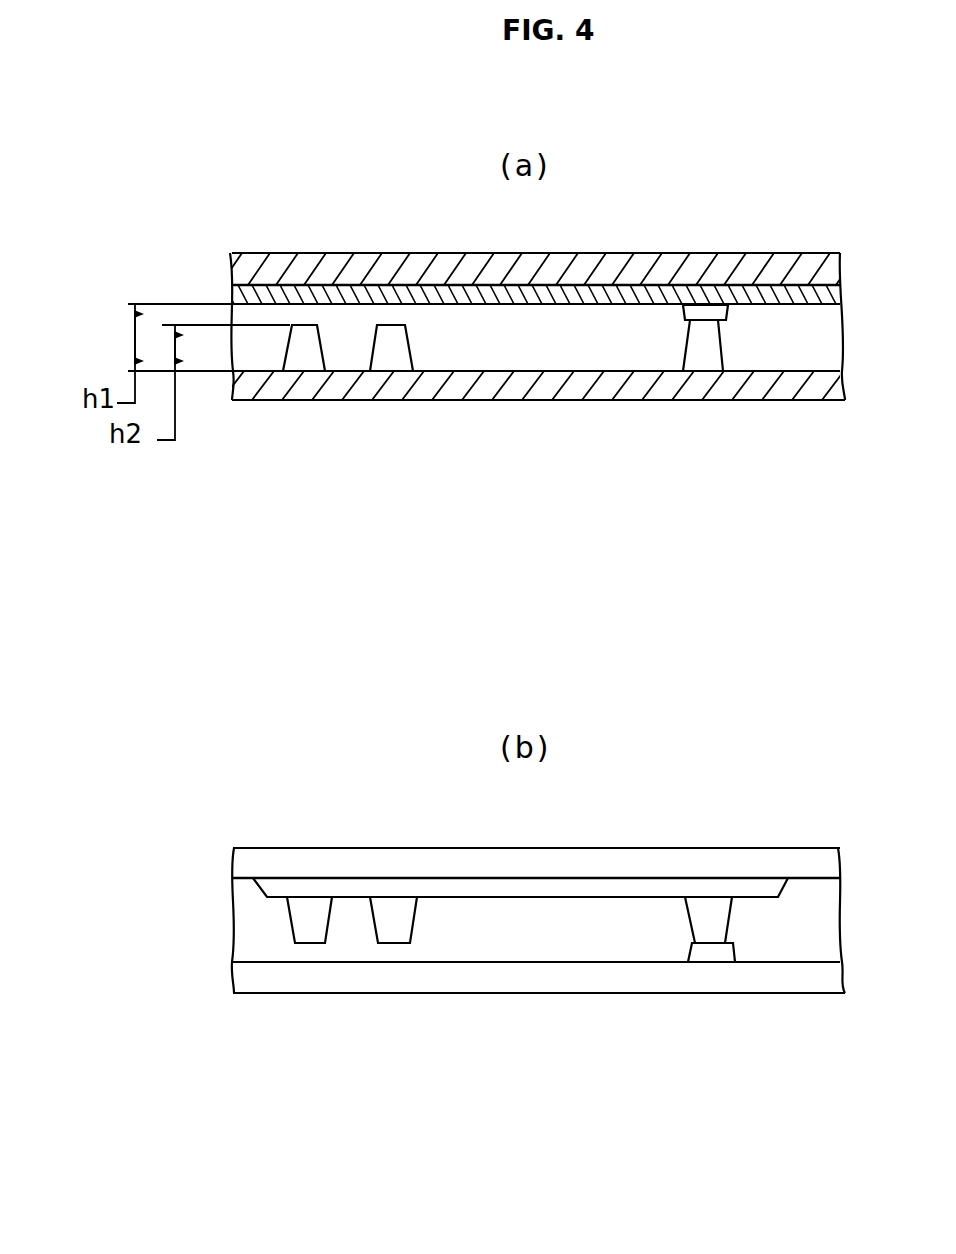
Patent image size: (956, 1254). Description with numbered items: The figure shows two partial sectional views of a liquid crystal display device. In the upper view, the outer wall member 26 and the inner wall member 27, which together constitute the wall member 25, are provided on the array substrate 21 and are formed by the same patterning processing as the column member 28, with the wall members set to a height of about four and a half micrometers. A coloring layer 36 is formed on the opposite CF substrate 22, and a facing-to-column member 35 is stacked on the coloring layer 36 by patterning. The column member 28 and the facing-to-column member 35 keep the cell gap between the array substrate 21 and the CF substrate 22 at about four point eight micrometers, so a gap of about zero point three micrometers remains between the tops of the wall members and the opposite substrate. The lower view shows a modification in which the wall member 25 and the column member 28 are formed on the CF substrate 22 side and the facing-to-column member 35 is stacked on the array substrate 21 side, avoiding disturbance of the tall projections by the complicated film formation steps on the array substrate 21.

The array substrate 21 is at (533, 400).
The CF substrate 22 is at (560, 253).
The wall member 25 is at (332, 443).
The outer wall member 26 is at (323, 347).
The inner wall member 27 is at (410, 345).
The column member 28 is at (725, 350).
The facing-to-column member 35 is at (680, 313).
The coloring layer 36 is at (578, 304).